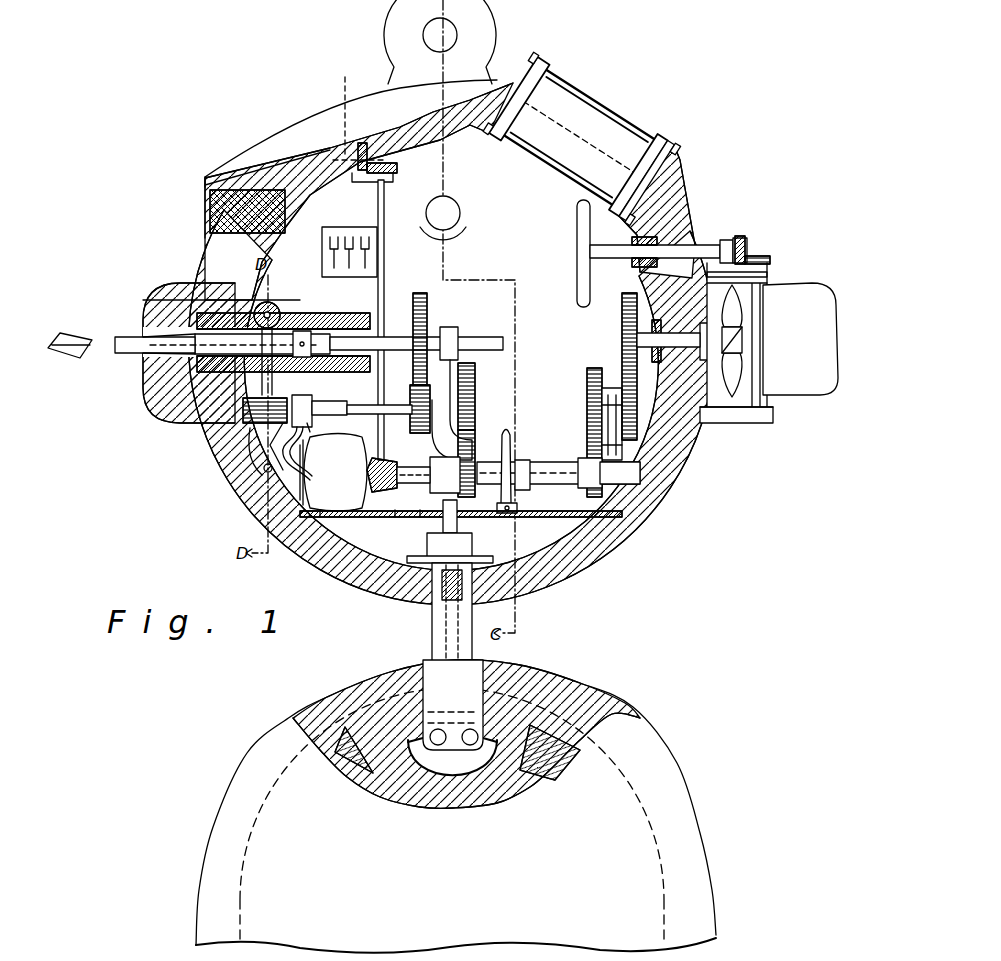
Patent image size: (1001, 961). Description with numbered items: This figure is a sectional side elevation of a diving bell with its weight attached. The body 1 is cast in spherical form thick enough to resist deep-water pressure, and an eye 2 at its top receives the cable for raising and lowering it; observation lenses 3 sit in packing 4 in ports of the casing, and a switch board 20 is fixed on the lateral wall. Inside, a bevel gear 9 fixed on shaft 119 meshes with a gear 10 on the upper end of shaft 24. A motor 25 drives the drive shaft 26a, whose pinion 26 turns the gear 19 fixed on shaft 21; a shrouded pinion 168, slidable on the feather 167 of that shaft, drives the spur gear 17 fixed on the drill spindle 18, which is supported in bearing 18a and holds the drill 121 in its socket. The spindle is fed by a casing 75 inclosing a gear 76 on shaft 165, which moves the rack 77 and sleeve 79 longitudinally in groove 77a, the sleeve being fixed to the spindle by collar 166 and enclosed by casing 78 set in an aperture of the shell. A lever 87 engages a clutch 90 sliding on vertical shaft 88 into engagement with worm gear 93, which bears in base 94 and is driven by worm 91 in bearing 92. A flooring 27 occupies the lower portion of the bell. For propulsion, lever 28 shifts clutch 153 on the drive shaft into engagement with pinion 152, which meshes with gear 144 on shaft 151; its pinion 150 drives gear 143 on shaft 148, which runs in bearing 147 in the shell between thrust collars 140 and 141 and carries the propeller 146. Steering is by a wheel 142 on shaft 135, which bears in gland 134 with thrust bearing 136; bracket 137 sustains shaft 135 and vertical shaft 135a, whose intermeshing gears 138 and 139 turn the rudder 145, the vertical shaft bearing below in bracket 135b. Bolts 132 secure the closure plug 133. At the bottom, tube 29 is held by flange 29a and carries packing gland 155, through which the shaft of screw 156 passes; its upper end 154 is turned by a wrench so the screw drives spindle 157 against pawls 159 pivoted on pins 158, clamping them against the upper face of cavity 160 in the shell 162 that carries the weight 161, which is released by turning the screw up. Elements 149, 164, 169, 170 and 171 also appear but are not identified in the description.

The body of diving bell 1 is at (330, 118).
The eye 2 is at (398, 17).
The observation lenses 3 is at (215, 210).
The packing 4 is at (212, 187).
The bevel gear 9 is at (368, 152).
The gear 10 is at (395, 175).
The spur gear 17 is at (427, 306).
The drill spindle 18 is at (503, 343).
The bearing 18a is at (457, 330).
The gear 19 is at (475, 375).
The switch board 20 is at (322, 265).
The shaft 21 is at (300, 470).
The shaft 24 is at (380, 300).
The motor 25 is at (320, 497).
The pinion 26 is at (470, 457).
The drive shaft 26a is at (445, 475).
The flooring 27 is at (558, 538).
The lever 28 is at (513, 432).
The tube 29 is at (440, 631).
The flange 29a is at (430, 548).
The casing 75 is at (290, 310).
The gear 76 is at (250, 315).
The rack 77 is at (235, 330).
The groove 77a is at (163, 308).
The casing 78 is at (217, 372).
The sleeve 79 is at (243, 365).
The lever 87 is at (250, 420).
The vertical shaft 88 is at (270, 390).
The clutch 90 is at (300, 452).
The worm 91 is at (265, 428).
The bearing 92 is at (250, 473).
The worm gear 93 is at (290, 470).
The base 94 is at (307, 420).
The shaft 119 is at (354, 106).
The drill 121 is at (90, 340).
The bolts 132 is at (548, 62).
The closure plug 133 is at (575, 122).
The gland 134 is at (652, 245).
The shaft 135 is at (677, 247).
The vertical shaft 135a is at (760, 377).
The bracket 135b is at (722, 417).
The thrust bearing 136 is at (725, 240).
The bracket 137 is at (742, 240).
The gear 138 is at (747, 247).
The gear 139 is at (767, 258).
The thrust collar 140 is at (697, 343).
The thrust collar 141 is at (730, 343).
The steering wheel 142 is at (647, 195).
The gear 143 is at (621, 318).
The gear 144 is at (588, 397).
The rudder 145 is at (793, 380).
The propeller 146 is at (737, 392).
The bearing 147 is at (703, 427).
The shaft 148 is at (683, 422).
The clutch 149 is at (630, 435).
The pinion 150 is at (607, 427).
The shaft 151 is at (590, 470).
The pinion 152 is at (530, 488).
The clutch 153 is at (537, 497).
The upper end of screw shaft 154 is at (455, 505).
The packing gland 155 is at (520, 548).
The screw 156 is at (480, 590).
The spindle 157 is at (472, 715).
The pins 158 is at (485, 733).
The pawls 159 is at (490, 750).
The cavity 160 is at (538, 727).
The weight 161 is at (563, 763).
The shell 162 is at (340, 705).
The sleeve 164 is at (337, 317).
The shaft 165 is at (278, 308).
The collar 166 is at (283, 442).
The feather 167 is at (363, 405).
The shrouded pinion 168 is at (418, 393).
The bracket 169 is at (380, 510).
The bracket 170 is at (395, 510).
The plate 171 is at (420, 510).